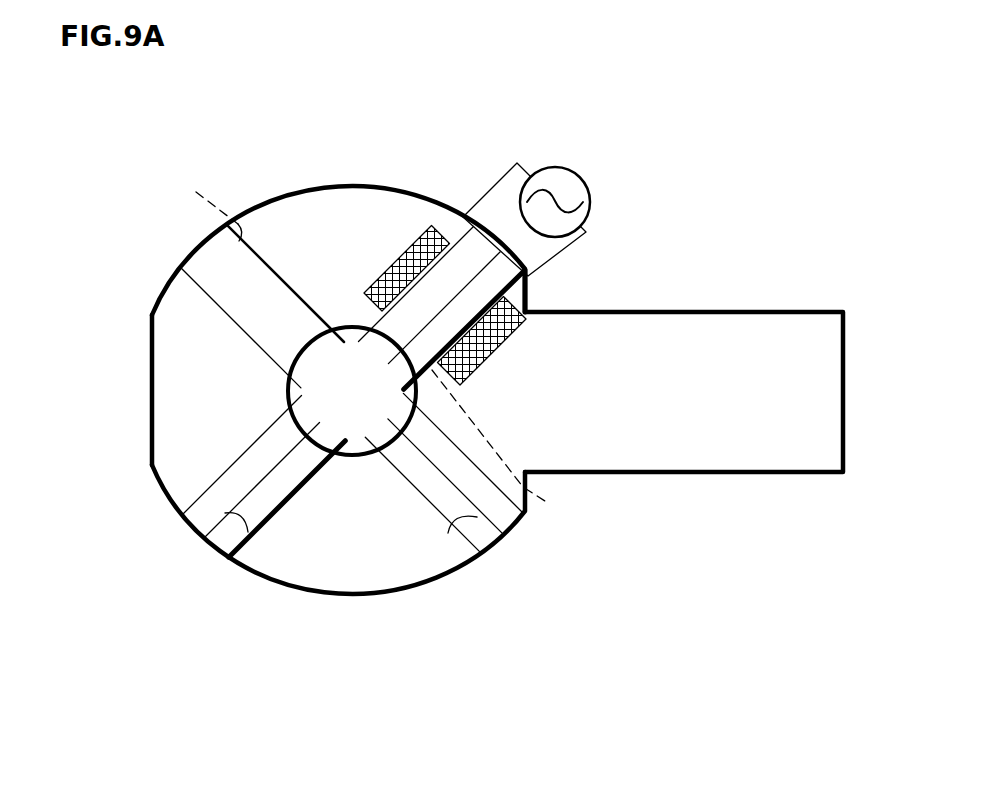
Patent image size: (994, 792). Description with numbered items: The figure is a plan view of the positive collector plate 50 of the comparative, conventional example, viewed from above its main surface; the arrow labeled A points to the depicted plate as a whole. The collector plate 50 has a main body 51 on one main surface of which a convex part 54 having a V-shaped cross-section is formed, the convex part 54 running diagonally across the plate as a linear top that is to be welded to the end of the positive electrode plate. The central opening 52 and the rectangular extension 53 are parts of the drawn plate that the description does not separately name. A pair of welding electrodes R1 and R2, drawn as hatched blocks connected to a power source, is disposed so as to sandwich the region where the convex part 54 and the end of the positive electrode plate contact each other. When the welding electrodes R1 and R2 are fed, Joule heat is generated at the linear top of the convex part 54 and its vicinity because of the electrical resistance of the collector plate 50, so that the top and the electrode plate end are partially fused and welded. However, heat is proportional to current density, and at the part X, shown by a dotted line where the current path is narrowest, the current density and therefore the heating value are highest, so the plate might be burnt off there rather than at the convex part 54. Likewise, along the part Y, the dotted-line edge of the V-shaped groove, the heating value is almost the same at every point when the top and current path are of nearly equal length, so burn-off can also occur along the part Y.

The collector plate 50 is at (330, 187).
The main body 51 is at (165, 370).
The center hole 52 is at (305, 390).
The terminal extension block 53 is at (735, 320).
The convex part 54 is at (213, 265).
The welding electrode R1 is at (418, 238).
The welding electrode R2 is at (525, 322).
The part X is at (501, 445).
The part Y is at (206, 209).
The sensor assembly A is at (152, 575).